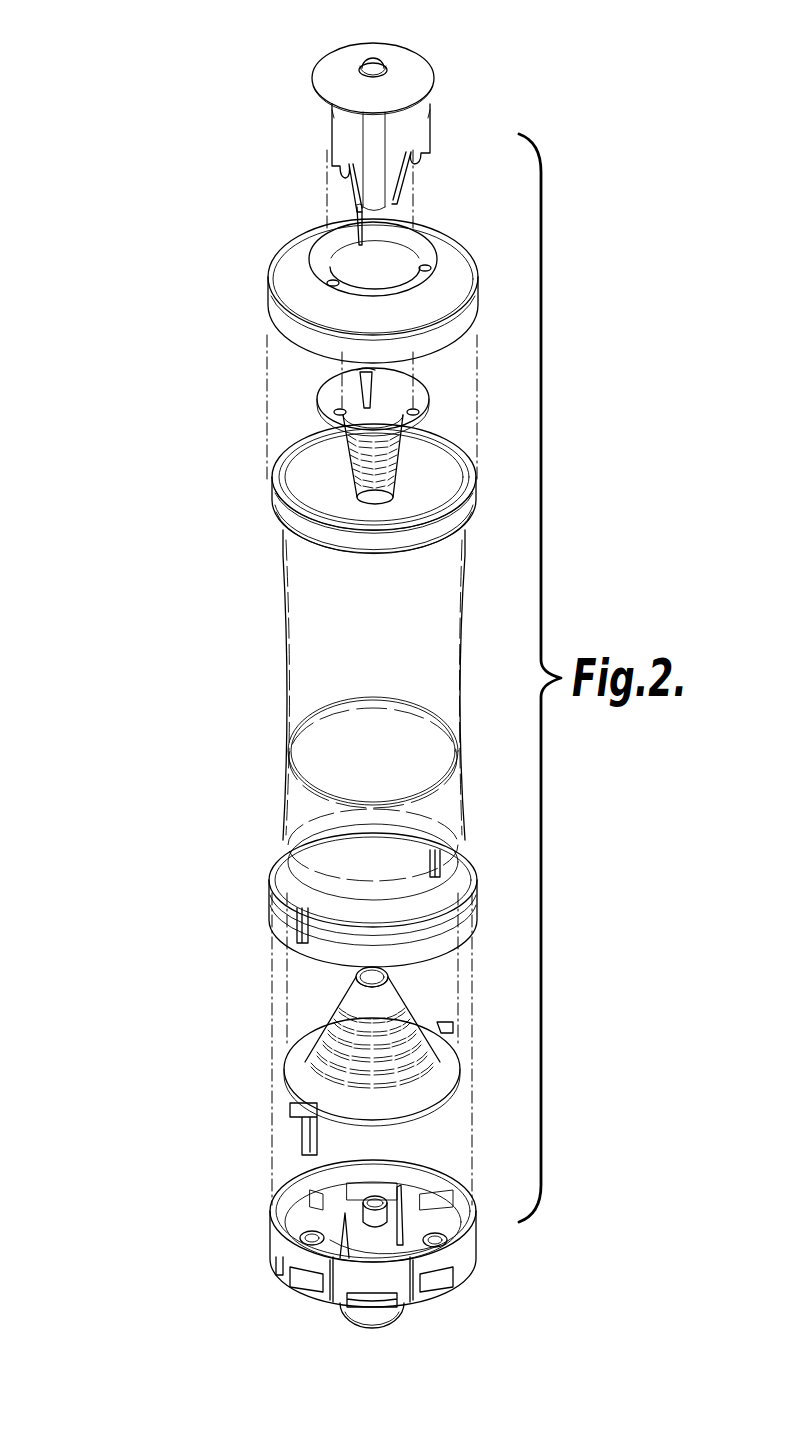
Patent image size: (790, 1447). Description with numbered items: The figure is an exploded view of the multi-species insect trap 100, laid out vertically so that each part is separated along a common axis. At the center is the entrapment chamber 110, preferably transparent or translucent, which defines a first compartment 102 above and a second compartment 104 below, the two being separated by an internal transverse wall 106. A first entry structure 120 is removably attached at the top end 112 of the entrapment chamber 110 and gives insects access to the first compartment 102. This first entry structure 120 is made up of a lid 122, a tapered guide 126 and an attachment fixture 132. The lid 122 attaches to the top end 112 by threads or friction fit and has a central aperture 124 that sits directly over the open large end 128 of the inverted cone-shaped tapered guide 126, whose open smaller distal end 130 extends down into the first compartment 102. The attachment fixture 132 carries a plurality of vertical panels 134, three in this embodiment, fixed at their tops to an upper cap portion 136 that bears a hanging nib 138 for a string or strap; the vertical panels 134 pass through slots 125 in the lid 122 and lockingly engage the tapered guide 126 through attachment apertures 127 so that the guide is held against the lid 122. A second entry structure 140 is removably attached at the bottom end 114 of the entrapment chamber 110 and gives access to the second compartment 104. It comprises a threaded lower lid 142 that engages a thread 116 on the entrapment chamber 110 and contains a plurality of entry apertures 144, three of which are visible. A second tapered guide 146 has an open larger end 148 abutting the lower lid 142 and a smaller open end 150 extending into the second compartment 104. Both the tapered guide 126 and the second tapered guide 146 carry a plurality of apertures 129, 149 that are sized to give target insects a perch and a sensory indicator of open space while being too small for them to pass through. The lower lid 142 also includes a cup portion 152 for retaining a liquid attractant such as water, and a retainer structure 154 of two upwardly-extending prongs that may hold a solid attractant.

The multi-species insect trap 100 is at (150, 85).
The first compartment 102 is at (290, 568).
The second compartment 104 is at (290, 800).
The internal transverse wall 106 is at (310, 747).
The entrapment chamber 110 is at (282, 607).
The top end 112 is at (280, 495).
The bottom end 114 is at (300, 913).
The thread 116 is at (313, 938).
The first entry structure 120 is at (277, 206).
The lid 122 is at (275, 312).
The central aperture 124 is at (345, 272).
The slots 125 is at (357, 238).
The tapered guide 126 is at (338, 454).
The attachment apertures 127 is at (323, 405).
The open large end 128 is at (323, 403).
The apertures 129 is at (360, 470).
The open smaller distal end 130 is at (357, 500).
The attachment fixture 132 is at (428, 118).
The vertical panels 134 is at (413, 140).
The upper cap portion 136 is at (416, 60).
The hanging nib 138 is at (362, 54).
The second entry structure 140 is at (264, 1177).
The lower lid 142 is at (290, 1257).
The entry apertures 144 is at (308, 1238).
The second tapered guide 146 is at (318, 1020).
The open larger end 148 is at (285, 1085).
The apertures 149 is at (313, 1047).
The smaller open end 150 is at (330, 973).
The cup portion 152 is at (400, 1318).
The retainer structure 154 is at (343, 1222).